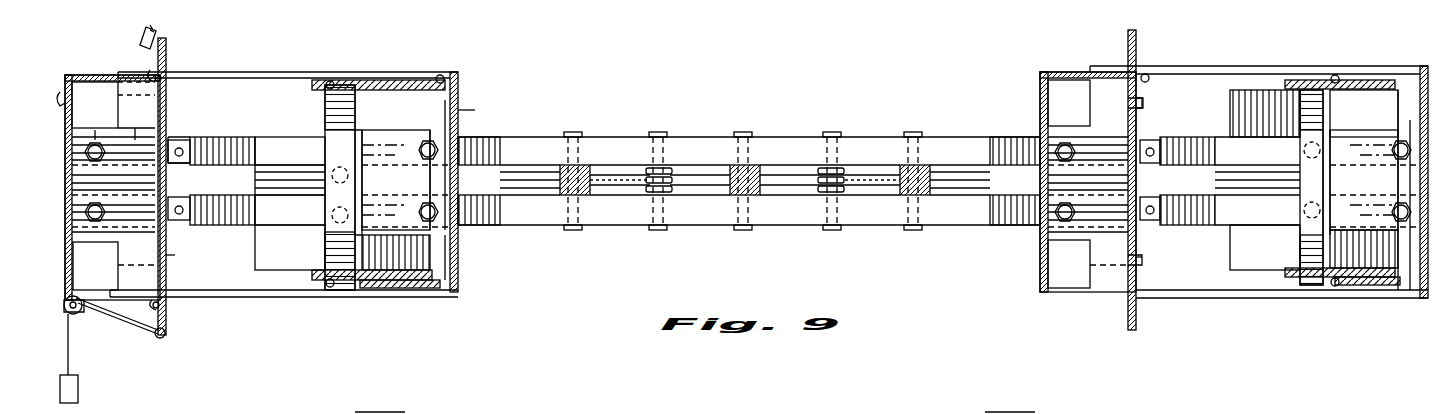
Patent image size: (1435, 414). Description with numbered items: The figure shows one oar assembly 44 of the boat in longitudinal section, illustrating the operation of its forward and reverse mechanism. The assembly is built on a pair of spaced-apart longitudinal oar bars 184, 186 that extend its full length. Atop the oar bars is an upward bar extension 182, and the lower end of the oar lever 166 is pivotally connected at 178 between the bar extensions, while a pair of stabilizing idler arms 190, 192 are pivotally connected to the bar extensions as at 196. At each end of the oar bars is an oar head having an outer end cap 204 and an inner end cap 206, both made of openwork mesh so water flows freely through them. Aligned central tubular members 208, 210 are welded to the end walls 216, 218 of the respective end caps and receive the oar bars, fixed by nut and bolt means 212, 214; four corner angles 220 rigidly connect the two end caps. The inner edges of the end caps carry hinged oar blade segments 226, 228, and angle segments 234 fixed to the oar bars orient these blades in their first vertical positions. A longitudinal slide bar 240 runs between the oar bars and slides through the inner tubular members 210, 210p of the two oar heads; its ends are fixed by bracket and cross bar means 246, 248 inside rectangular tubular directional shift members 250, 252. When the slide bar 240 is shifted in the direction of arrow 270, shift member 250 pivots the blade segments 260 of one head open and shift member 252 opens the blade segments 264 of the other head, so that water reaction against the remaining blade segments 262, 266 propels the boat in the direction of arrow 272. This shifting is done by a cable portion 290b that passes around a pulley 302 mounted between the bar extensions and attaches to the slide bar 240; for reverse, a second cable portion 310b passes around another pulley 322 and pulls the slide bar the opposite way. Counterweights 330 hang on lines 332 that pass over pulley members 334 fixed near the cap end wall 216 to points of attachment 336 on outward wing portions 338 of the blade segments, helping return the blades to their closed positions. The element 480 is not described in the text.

The oar assembly 44 is at (573, 268).
The lever 166 is at (752, 170).
The pivotal connection 178 is at (743, 230).
The upward bar extension 182 is at (798, 150).
The oar bar 184 is at (225, 225).
The oar bar 186 is at (218, 165).
The stabilizing idler arm 190 is at (582, 175).
The stabilizing idler arm 192 is at (921, 170).
The pivotal connection 196 is at (573, 132).
The outer end cap 204 is at (80, 73).
The inner end cap 206 is at (457, 71).
The central tubular member 208 is at (136, 125).
The central tubular member 210 is at (406, 200).
The inner tubular member 210p is at (1254, 190).
The nut and bolt means 212 is at (92, 124).
The nut and bolt means 214 is at (458, 142).
The end wall 216 is at (95, 105).
The end wall 218 is at (458, 112).
The corner angle 220 is at (215, 80).
The oar blade segment 226 is at (156, 103).
The oar blade segment 228 is at (168, 262).
The angle segment 234 is at (168, 134).
The slide bar 240 is at (518, 176).
The bracket and cross bar means 246 is at (324, 181).
The bracket and cross bar means 248 is at (328, 245).
The directional shift member 250 is at (283, 82).
The directional shift member 252 is at (1240, 85).
The oar blade segment assembly 260 is at (340, 78).
The oar blade segment assembly 262 is at (168, 50).
The oar blade segment assembly 264 is at (1303, 78).
The oar blade segment assembly 266 is at (1140, 103).
The arrow 270 is at (705, 180).
The arrow 272 is at (777, 107).
The cable portion 290b is at (630, 196).
The pulley 302 is at (664, 168).
The cable portion 310b is at (866, 184).
The pulley 322 is at (844, 168).
The counterweight 330 is at (78, 398).
The line 332 is at (70, 366).
The pulley member 334 is at (80, 320).
The point of attachment 336 is at (154, 336).
The wing portion 338 is at (166, 332).
The outer tube 480 is at (800, 214).